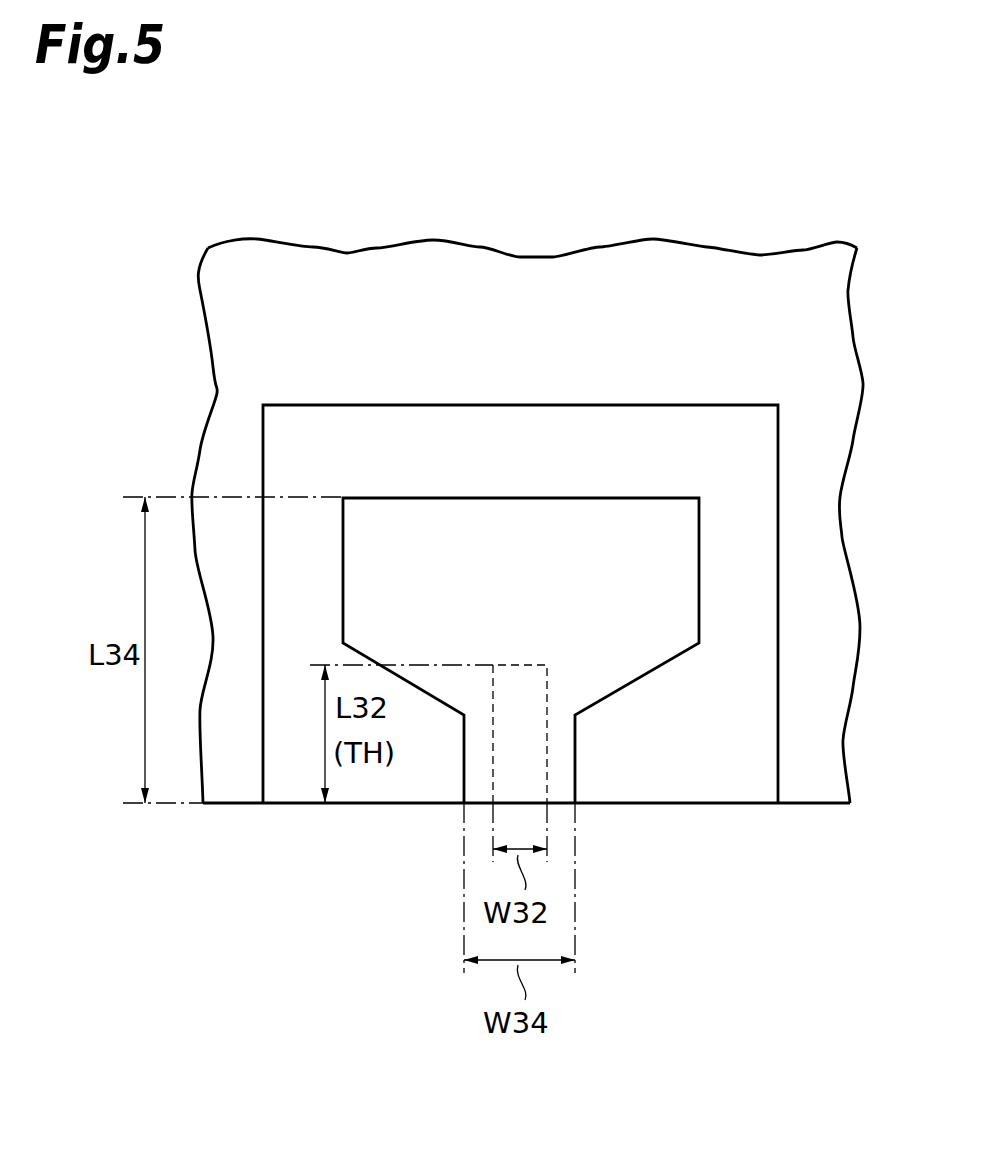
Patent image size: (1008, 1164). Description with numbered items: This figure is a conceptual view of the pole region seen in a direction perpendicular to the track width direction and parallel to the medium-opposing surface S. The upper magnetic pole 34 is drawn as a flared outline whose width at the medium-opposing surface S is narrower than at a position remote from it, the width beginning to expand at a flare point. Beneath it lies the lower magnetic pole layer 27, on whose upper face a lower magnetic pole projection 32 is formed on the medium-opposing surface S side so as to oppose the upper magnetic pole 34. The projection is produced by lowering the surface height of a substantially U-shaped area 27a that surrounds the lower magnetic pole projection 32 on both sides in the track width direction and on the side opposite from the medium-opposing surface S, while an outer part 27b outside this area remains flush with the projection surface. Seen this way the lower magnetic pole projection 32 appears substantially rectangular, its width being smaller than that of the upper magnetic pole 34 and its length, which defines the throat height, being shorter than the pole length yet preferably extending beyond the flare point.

The lower magnetic pole layer 27 is at (667, 270).
The substantially U-shaped area 27a is at (318, 440).
The outer part 27b is at (375, 270).
The lower magnetic pole projection 32 is at (492, 745).
The upper magnetic pole 34 is at (657, 496).
The medium-opposing surface S is at (718, 805).